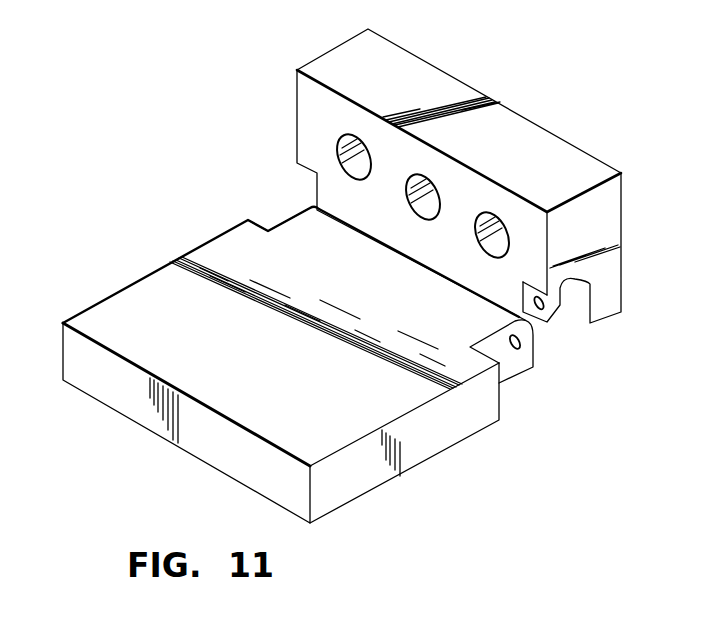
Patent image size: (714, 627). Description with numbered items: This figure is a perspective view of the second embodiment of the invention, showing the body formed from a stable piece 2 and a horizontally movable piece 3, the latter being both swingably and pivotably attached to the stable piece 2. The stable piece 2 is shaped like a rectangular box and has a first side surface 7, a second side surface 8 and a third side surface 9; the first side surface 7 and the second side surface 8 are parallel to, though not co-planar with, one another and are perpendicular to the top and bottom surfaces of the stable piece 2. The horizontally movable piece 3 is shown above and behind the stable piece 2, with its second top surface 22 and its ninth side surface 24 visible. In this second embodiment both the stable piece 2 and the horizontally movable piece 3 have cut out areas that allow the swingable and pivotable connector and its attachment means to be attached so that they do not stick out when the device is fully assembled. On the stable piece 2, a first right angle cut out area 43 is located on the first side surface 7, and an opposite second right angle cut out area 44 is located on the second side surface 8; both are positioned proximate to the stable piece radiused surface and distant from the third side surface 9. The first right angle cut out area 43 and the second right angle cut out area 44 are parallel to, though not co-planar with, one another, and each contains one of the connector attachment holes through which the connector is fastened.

The stable piece 2 is at (315, 341).
The horizontally movable piece 3 is at (459, 166).
The first side surface 7 is at (167, 248).
The second side surface 8 is at (463, 422).
The third side surface 9 is at (210, 448).
The second top surface 22 is at (352, 64).
The ninth side surface 24 is at (601, 240).
The first right angle cut out area 43 is at (282, 212).
The second right angle cut out area 44 is at (511, 363).